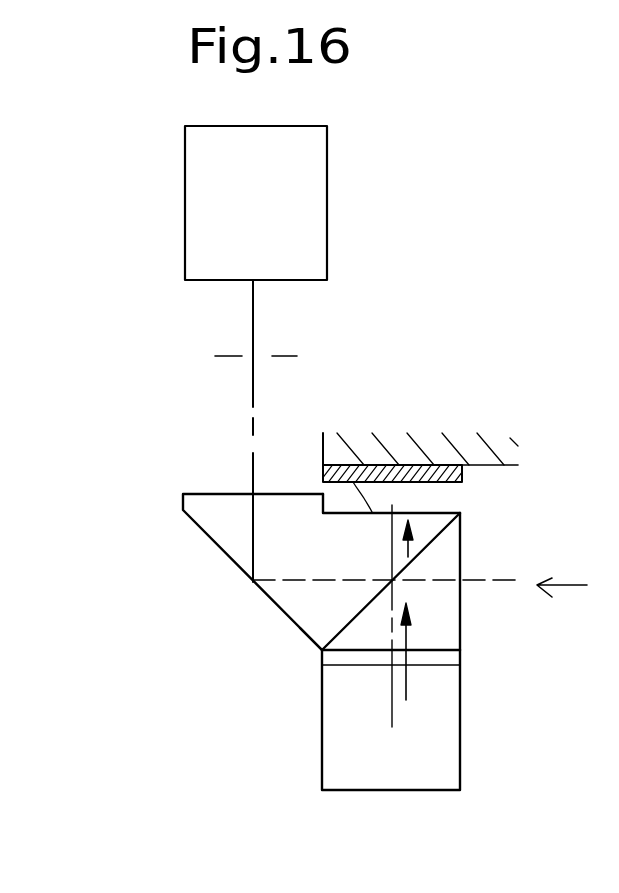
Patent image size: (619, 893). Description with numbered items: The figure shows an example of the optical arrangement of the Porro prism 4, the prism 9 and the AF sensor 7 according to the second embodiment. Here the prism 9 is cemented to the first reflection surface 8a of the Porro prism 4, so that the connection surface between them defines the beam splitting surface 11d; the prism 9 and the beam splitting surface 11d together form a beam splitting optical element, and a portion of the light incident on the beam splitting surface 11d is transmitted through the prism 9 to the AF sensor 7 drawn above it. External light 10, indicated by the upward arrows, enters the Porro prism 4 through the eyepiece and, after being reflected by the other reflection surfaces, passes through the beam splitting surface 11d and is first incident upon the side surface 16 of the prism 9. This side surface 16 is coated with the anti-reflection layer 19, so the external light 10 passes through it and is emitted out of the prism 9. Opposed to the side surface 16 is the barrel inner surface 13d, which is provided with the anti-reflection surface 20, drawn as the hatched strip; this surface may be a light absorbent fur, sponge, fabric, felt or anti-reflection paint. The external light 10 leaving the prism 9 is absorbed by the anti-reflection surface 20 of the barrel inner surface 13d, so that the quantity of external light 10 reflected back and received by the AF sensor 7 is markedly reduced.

The AF sensor 7 is at (293, 175).
The prism 9 is at (293, 597).
The first reflection surface 8a is at (338, 625).
The anti-reflection layer 19 is at (341, 511).
The side surface 16 is at (363, 463).
The anti-reflection surface 20 is at (435, 463).
The barrel inner surface 13d is at (531, 492).
The beam splitting surface 11d is at (445, 531).
The external light 10 is at (407, 635).
The Porro prism 4 is at (463, 688).